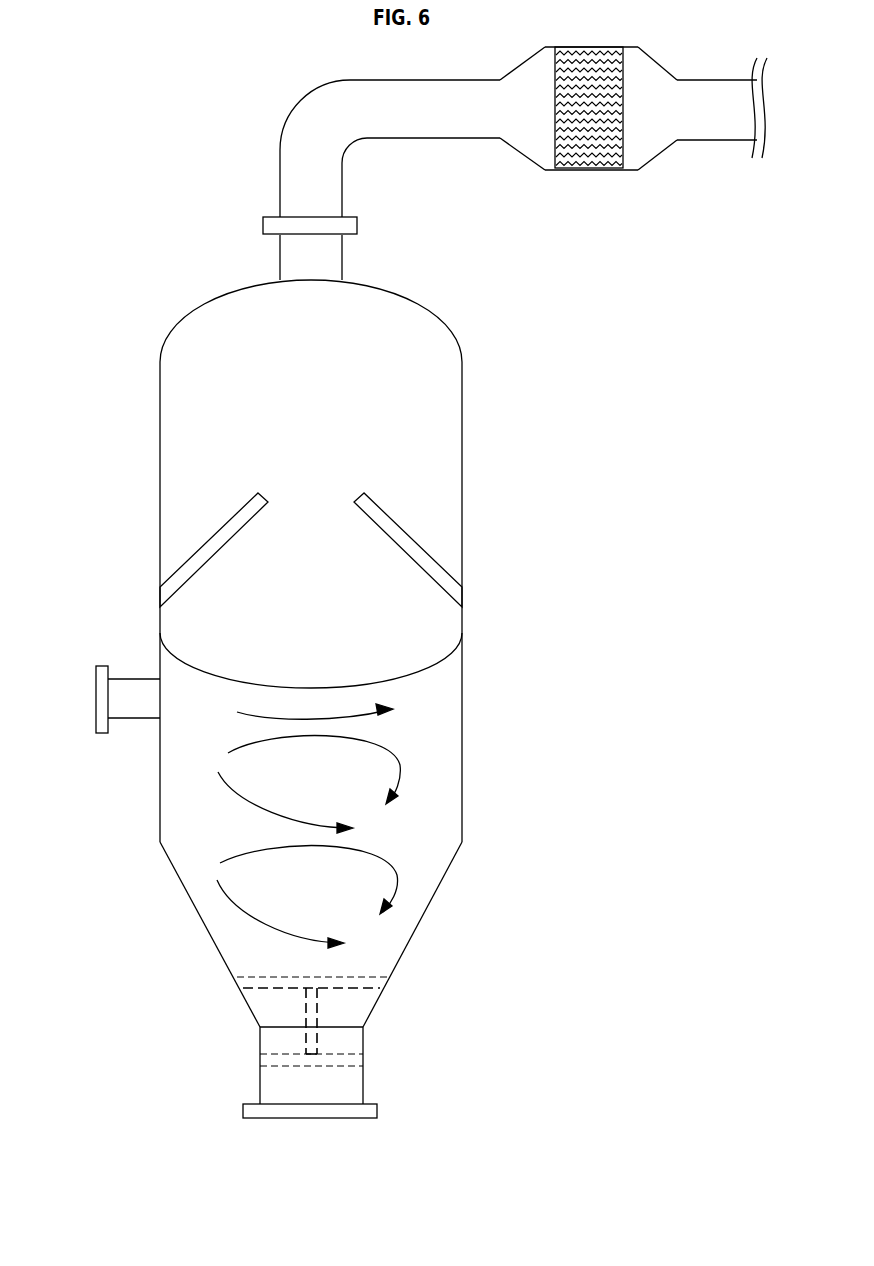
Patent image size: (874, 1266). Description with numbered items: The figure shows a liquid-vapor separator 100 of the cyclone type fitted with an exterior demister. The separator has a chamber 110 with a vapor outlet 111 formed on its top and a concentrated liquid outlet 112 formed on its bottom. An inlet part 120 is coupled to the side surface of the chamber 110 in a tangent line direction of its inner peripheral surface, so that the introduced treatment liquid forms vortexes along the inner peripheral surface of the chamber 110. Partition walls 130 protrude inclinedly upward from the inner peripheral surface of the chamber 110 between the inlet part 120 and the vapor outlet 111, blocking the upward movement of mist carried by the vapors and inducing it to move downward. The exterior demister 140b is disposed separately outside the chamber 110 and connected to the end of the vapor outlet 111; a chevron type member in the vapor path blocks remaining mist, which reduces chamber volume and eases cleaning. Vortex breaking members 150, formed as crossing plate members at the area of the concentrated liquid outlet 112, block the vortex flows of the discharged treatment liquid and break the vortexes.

The liquid-vapor separator 100 is at (205, 200).
The chamber 110 is at (455, 341).
The vapor outlet 111 is at (263, 223).
The concentrated liquid outlet 112 is at (323, 1110).
The inlet part 120 is at (97, 675).
The partition walls 130 is at (222, 540).
The exterior demister 140b is at (652, 140).
The vortex breaking members 150 is at (357, 980).